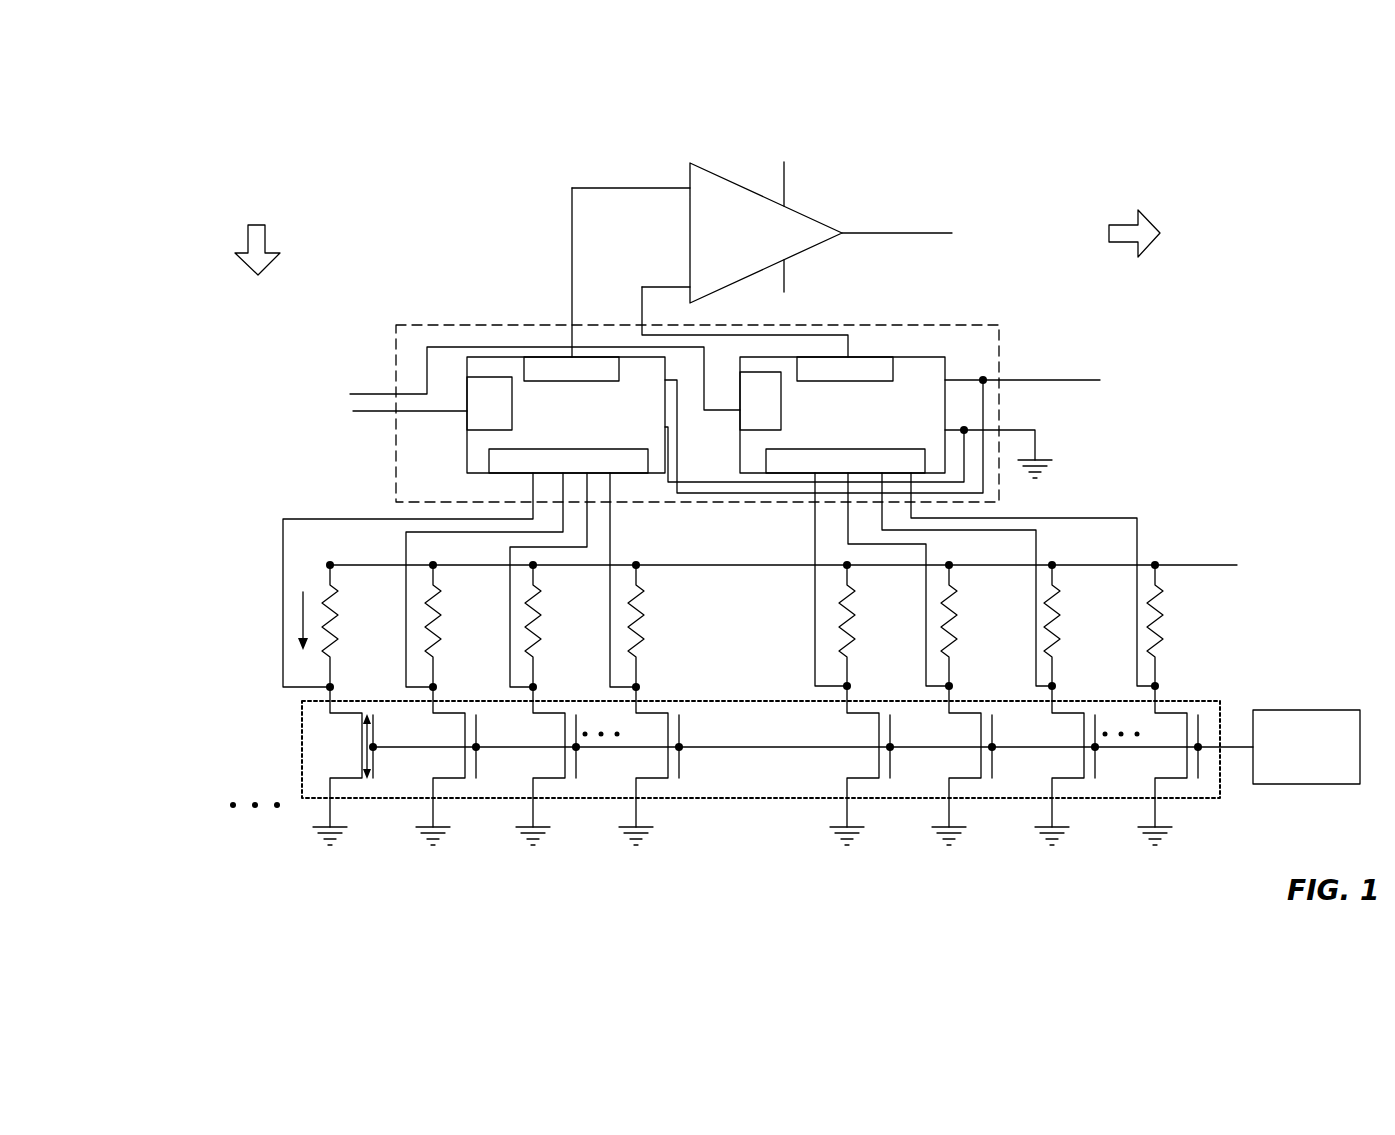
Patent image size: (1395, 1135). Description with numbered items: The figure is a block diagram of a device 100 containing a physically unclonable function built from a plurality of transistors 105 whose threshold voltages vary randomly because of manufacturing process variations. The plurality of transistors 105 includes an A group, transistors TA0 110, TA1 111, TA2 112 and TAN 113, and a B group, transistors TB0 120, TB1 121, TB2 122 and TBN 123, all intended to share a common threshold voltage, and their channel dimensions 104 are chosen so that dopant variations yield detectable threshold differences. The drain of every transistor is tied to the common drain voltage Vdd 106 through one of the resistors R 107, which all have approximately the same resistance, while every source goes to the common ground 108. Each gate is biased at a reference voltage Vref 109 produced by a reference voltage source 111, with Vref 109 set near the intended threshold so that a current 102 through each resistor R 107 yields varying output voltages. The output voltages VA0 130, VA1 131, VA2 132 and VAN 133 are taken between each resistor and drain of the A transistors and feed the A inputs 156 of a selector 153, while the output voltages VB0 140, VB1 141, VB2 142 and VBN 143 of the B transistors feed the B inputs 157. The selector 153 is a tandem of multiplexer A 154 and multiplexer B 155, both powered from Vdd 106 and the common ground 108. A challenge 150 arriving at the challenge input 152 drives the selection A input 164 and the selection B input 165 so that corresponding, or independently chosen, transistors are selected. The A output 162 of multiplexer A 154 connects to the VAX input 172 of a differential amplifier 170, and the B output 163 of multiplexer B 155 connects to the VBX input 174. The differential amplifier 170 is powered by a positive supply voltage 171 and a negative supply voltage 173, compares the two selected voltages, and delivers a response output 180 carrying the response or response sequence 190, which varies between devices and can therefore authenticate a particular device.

The device 100 is at (179, 134).
The current 102 is at (303, 605).
The channel dimensions 104 is at (367, 781).
The plurality of transistors 105 is at (1192, 800).
The common drain voltage Vdd 106 is at (1047, 380).
The resistor R 107 is at (735, 626).
The common ground 108 is at (1043, 453).
The reference voltage Vref 109 is at (1237, 745).
The transistor TA0 110 is at (362, 773).
The reference voltage source 111 is at (465, 773).
The transistor TA2 112 is at (565, 773).
The transistor TAN 113 is at (668, 773).
The transistor TB0 120 is at (879, 773).
The transistor TB1 121 is at (981, 773).
The transistor TB2 122 is at (1084, 773).
The transistor TBN 123 is at (1187, 773).
The output voltage VA0 130 is at (283, 655).
The output voltage VA1 131 is at (406, 657).
The output voltage VA2 132 is at (510, 655).
The output voltage VAN 133 is at (610, 657).
The output voltage VB0 140 is at (815, 657).
The output voltage VB1 141 is at (926, 657).
The output voltage VB2 142 is at (1036, 657).
The output voltage VBN 143 is at (1137, 657).
The challenge 150 is at (253, 170).
The challenge input 152 is at (353, 411).
The selector 153 is at (968, 315).
The multiplexer A 154 is at (540, 415).
The multiplexer B 155 is at (817, 415).
The A inputs 156 is at (558, 447).
The B inputs 157 is at (828, 447).
The A output 162 is at (555, 382).
The B output 163 is at (832, 382).
The selection A input 164 is at (466, 422).
The selection B input 165 is at (739, 422).
The differential amplifier 170 is at (705, 168).
The positive supply voltage 171 is at (784, 180).
The VAX input 172 is at (668, 187).
The negative supply voltage 173 is at (786, 282).
The VBX input 174 is at (668, 286).
The response output 180 is at (903, 233).
The response sequence 190 is at (1242, 202).